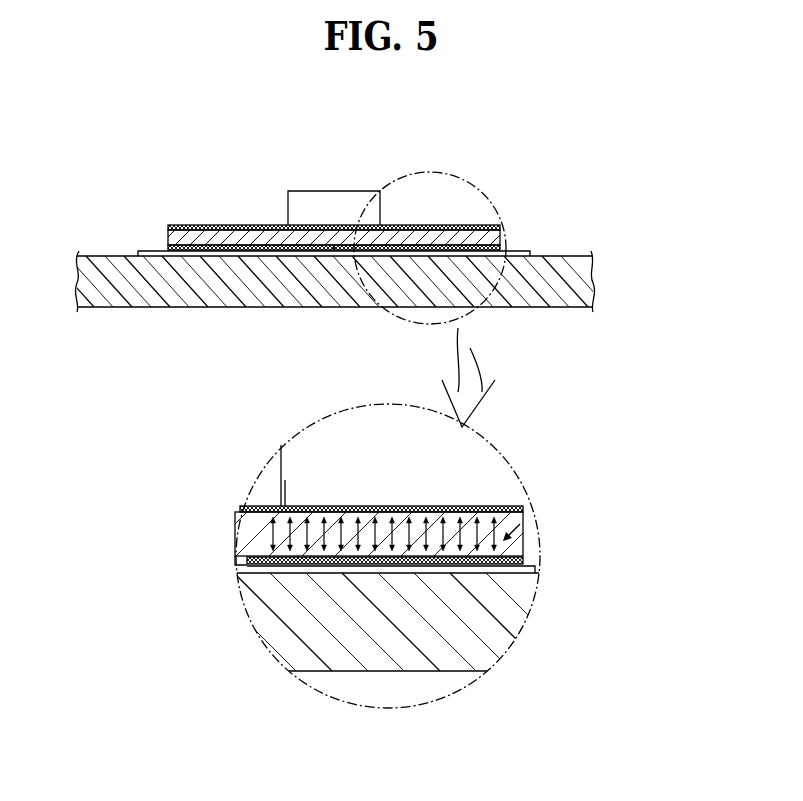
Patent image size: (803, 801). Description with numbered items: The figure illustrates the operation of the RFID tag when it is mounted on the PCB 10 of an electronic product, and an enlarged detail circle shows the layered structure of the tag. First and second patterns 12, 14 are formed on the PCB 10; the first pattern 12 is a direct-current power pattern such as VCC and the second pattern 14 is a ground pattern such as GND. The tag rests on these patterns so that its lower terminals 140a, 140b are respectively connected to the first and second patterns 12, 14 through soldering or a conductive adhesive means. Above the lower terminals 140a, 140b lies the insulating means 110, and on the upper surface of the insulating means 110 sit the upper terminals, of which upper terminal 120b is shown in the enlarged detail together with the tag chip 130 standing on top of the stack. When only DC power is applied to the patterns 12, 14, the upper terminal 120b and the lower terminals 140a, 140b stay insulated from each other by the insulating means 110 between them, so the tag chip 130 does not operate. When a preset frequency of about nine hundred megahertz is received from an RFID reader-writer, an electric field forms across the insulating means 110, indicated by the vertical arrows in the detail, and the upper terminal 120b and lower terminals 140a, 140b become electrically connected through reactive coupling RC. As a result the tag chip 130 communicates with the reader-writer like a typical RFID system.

The PCB 10 is at (563, 267).
The first pattern 12 is at (150, 250).
The second pattern 14 is at (513, 250).
The tag chip 130 is at (340, 190).
The lower terminal 140a is at (203, 251).
The lower terminal 140b is at (497, 257).
The insulating means 110 is at (236, 540).
The upper terminal 120b is at (488, 509).
The reactive coupling RC is at (525, 518).